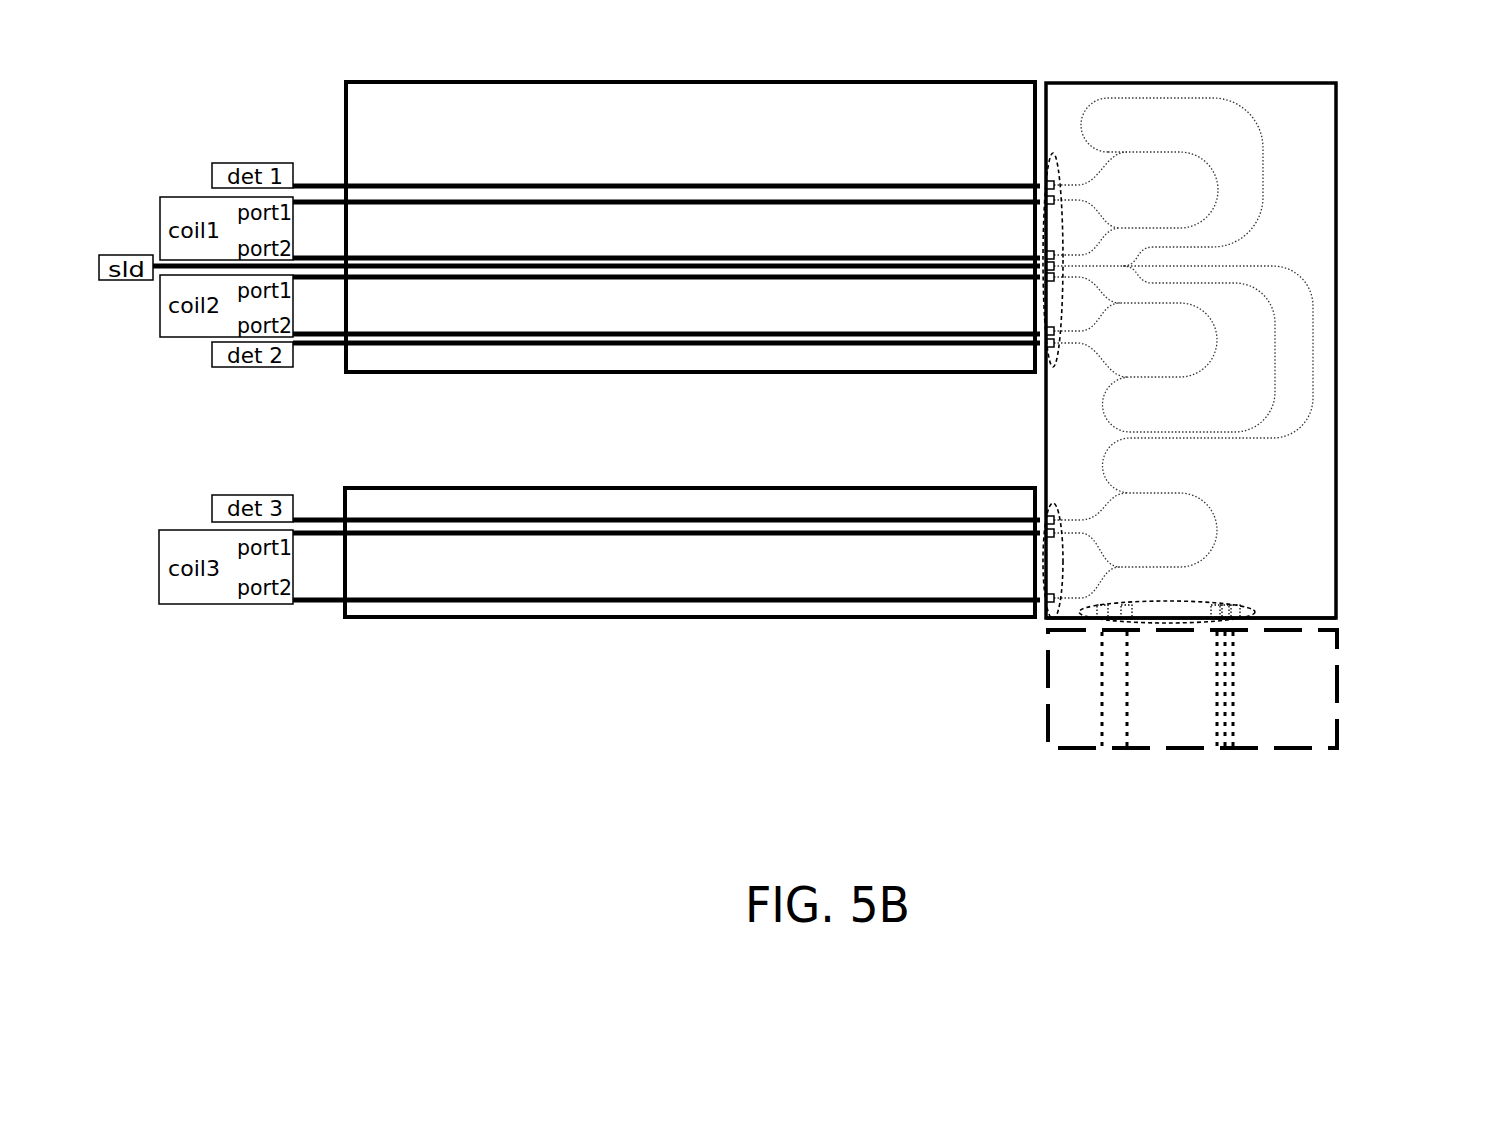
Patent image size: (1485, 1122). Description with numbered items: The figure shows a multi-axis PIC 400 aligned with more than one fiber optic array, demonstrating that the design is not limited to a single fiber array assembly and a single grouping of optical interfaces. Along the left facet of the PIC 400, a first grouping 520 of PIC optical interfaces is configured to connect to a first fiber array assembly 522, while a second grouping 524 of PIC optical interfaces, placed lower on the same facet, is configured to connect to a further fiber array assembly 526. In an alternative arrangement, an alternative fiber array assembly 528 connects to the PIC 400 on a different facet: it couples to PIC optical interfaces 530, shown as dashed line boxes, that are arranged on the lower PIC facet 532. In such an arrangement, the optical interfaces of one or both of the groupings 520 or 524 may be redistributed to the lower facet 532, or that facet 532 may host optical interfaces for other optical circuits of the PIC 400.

The PIC 400 is at (1325, 102).
The first grouping of PIC optical interfaces 520 is at (1055, 167).
The first fiber array assembly 522 is at (952, 90).
The second grouping of PIC optical interfaces 524 is at (1054, 512).
The fiber array assembly 526 is at (946, 504).
The alternative fiber array assembly 528 is at (1048, 713).
The PIC optical interfaces 530 is at (1218, 604).
The lower PIC facet 532 is at (1272, 617).